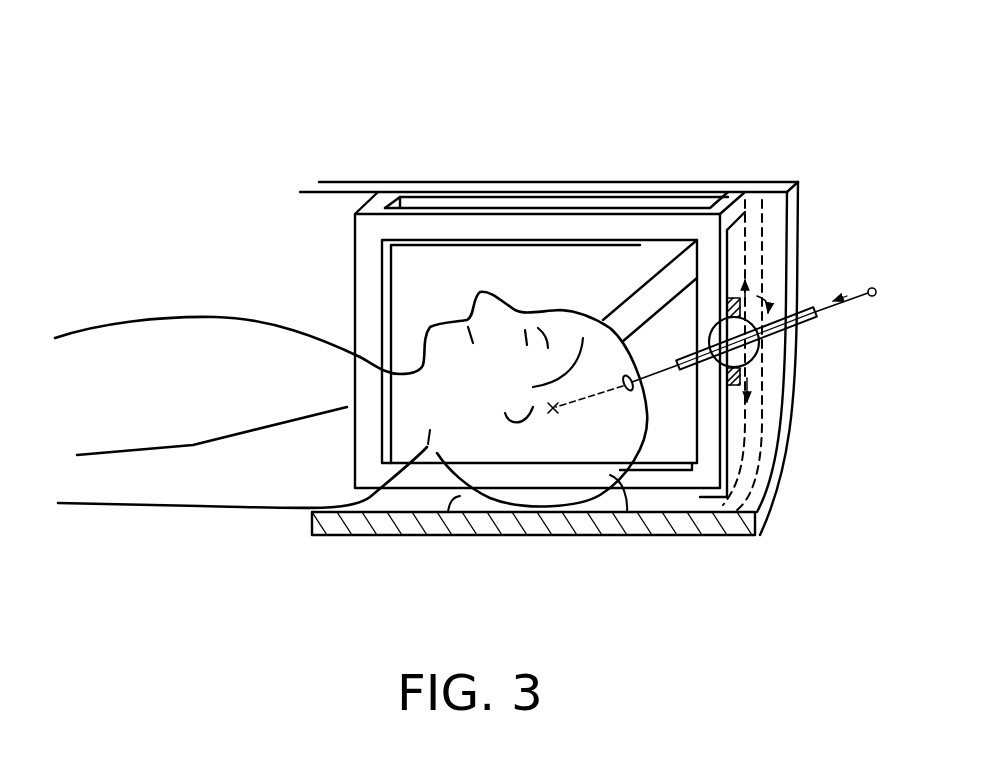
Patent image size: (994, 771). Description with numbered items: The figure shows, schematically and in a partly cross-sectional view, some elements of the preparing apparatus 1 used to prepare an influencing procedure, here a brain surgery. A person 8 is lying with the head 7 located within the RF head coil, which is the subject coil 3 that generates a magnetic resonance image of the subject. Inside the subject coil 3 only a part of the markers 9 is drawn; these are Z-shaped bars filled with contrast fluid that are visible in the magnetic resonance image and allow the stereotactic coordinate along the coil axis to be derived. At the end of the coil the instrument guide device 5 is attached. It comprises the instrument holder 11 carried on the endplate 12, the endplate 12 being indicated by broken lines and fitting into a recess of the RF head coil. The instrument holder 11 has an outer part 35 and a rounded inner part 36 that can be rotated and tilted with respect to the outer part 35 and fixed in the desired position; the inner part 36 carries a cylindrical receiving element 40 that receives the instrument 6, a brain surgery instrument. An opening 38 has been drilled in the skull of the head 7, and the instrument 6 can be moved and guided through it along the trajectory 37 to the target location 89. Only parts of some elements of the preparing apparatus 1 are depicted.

The preparing apparatus 1 is at (643, 107).
The subject coil 3 is at (662, 182).
The instrument guide device 5 is at (820, 207).
The instrument 6 is at (850, 305).
The head 7 is at (613, 475).
The person 8 is at (172, 338).
The markers 9 is at (648, 307).
The instrument holder 11 is at (764, 366).
The endplate 12 is at (740, 480).
The outer part 35 is at (745, 378).
The inner part 36 is at (713, 322).
The trajectory 37 is at (608, 378).
The opening 38 is at (625, 398).
The cylindrical receiving element 40 is at (815, 306).
The target location 89 is at (546, 416).